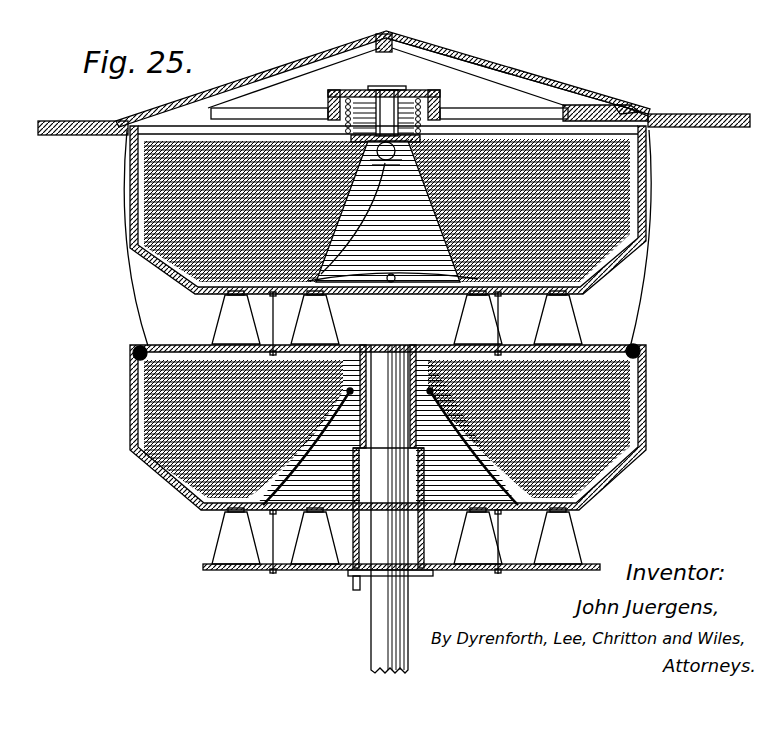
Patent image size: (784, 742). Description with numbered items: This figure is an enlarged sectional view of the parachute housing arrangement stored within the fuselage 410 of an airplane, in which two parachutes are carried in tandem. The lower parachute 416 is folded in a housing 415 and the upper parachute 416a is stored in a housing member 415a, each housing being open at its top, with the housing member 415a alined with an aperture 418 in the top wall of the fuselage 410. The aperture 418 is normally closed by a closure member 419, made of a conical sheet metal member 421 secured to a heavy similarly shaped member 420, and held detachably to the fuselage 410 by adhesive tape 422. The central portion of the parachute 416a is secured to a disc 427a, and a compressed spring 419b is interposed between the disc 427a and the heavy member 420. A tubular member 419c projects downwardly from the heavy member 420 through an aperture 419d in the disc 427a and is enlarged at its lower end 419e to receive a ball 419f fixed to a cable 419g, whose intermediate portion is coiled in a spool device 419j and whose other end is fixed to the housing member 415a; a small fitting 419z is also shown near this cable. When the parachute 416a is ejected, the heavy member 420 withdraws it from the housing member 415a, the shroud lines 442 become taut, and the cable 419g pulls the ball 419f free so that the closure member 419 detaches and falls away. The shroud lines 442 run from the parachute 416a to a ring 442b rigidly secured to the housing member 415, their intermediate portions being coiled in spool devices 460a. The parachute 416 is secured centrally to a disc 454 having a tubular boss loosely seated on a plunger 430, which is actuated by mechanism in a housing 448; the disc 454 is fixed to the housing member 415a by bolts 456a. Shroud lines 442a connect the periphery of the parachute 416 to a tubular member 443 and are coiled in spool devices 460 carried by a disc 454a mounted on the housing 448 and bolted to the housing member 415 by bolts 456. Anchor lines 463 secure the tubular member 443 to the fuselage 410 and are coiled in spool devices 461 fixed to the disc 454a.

The fuselage 410 is at (695, 106).
The aperture 418 is at (663, 107).
The closure member 419 is at (503, 66).
The spring 419b is at (318, 94).
The tubular member 419c is at (382, 78).
The aperture 419d is at (413, 134).
The enlarged end 419e is at (418, 206).
The ball 419f is at (345, 170).
The cable 419g is at (418, 238).
The spool device 419j is at (309, 300).
The wire 419z is at (389, 271).
The heavy member 420 is at (417, 54).
The conical sheet metal member 421 is at (536, 77).
The adhesive tape 422 is at (613, 102).
The disc 427a is at (437, 128).
The housing member 415a is at (639, 213).
The parachute 416a is at (639, 171).
The housing 415 is at (640, 411).
The parachute 416 is at (640, 372).
The shroud lines 442 is at (119, 282).
The shroud lines 442a is at (488, 493).
The ring 442b is at (641, 341).
The plunger 430 is at (378, 442).
The tubular member 443 is at (347, 478).
The housing 448 is at (401, 597).
The disc 454 is at (556, 336).
The disc 454a is at (417, 334).
The bolts 456 is at (266, 558).
The bolts 456a is at (493, 312).
The spool devices 460 is at (215, 533).
The spool devices 460a is at (222, 304).
The spool devices 461 is at (314, 532).
The anchor lines 463 is at (290, 492).